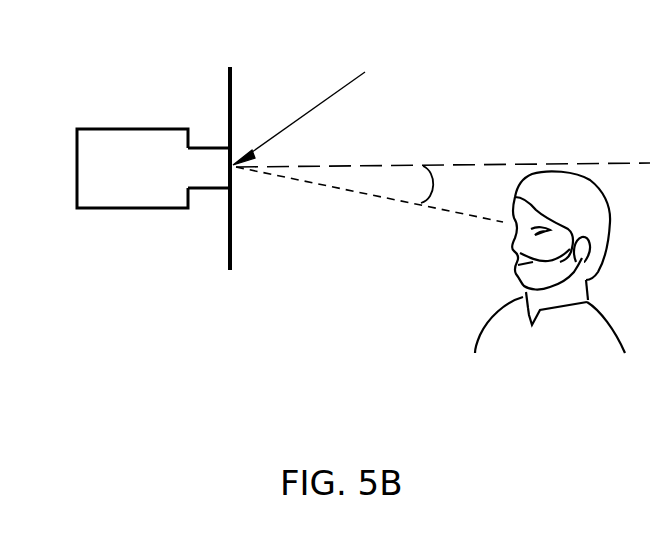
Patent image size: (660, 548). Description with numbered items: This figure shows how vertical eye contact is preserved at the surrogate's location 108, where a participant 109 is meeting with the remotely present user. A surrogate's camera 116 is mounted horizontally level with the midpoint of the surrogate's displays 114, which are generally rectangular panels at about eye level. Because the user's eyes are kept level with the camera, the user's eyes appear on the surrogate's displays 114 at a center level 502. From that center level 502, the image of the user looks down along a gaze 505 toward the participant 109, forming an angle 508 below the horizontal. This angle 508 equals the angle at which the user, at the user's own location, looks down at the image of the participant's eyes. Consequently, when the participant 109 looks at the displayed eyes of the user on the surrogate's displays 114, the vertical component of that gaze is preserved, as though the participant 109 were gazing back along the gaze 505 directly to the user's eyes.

The surrogate's displays 114 is at (233, 108).
The surrogate's cameras 116 is at (152, 178).
The center level 502 is at (321, 107).
The gaze 505 is at (344, 189).
The angle 508 is at (431, 182).
The surrogate's location 108 is at (303, 331).
The participant 109 is at (582, 352).